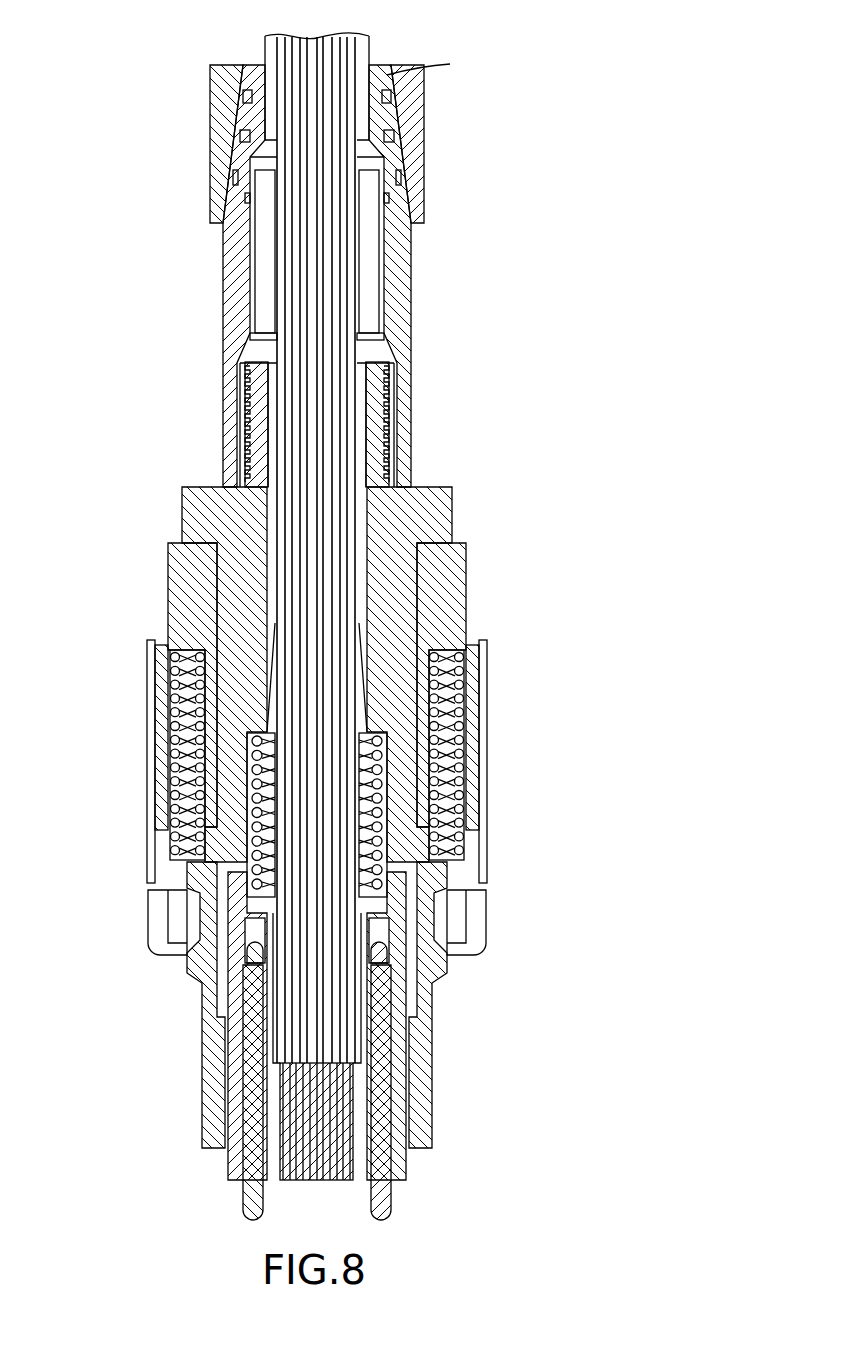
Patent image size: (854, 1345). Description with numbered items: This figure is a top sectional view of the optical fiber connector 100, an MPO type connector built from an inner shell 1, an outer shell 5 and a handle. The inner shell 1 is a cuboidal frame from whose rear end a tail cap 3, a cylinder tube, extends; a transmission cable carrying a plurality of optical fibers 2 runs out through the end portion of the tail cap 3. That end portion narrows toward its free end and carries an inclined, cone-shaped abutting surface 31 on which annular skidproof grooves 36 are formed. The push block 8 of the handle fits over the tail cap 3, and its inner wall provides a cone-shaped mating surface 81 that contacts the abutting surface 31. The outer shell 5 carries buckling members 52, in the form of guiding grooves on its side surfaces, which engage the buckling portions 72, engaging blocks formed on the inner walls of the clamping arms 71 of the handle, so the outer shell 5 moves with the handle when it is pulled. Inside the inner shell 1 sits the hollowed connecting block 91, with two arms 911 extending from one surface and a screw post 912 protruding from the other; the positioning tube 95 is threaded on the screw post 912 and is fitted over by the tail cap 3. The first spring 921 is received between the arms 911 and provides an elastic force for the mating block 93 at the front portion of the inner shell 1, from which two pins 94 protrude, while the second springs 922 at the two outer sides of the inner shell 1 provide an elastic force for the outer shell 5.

The optical fiber connector 100 is at (84, 356).
The inner shell 1 is at (453, 605).
The optical fibers 2 is at (305, 1108).
The tail cap 3 is at (400, 290).
The outer shell 5 is at (173, 880).
The push block 8 is at (425, 130).
The abutting surface 31 is at (243, 75).
The skidproof grooves 36 is at (243, 137).
The buckling members 52 is at (153, 712).
The clamping arms 71 is at (158, 770).
The buckling portions 72 is at (476, 781).
The mating surface 81 is at (450, 64).
The connecting block 91 is at (197, 525).
The arms 911 is at (240, 635).
The screw post 912 is at (380, 437).
The first spring 921 is at (385, 848).
The second springs 922 is at (440, 735).
The mating block 93 is at (393, 1083).
The pins 94 is at (257, 1197).
The positioning tube 95 is at (245, 342).